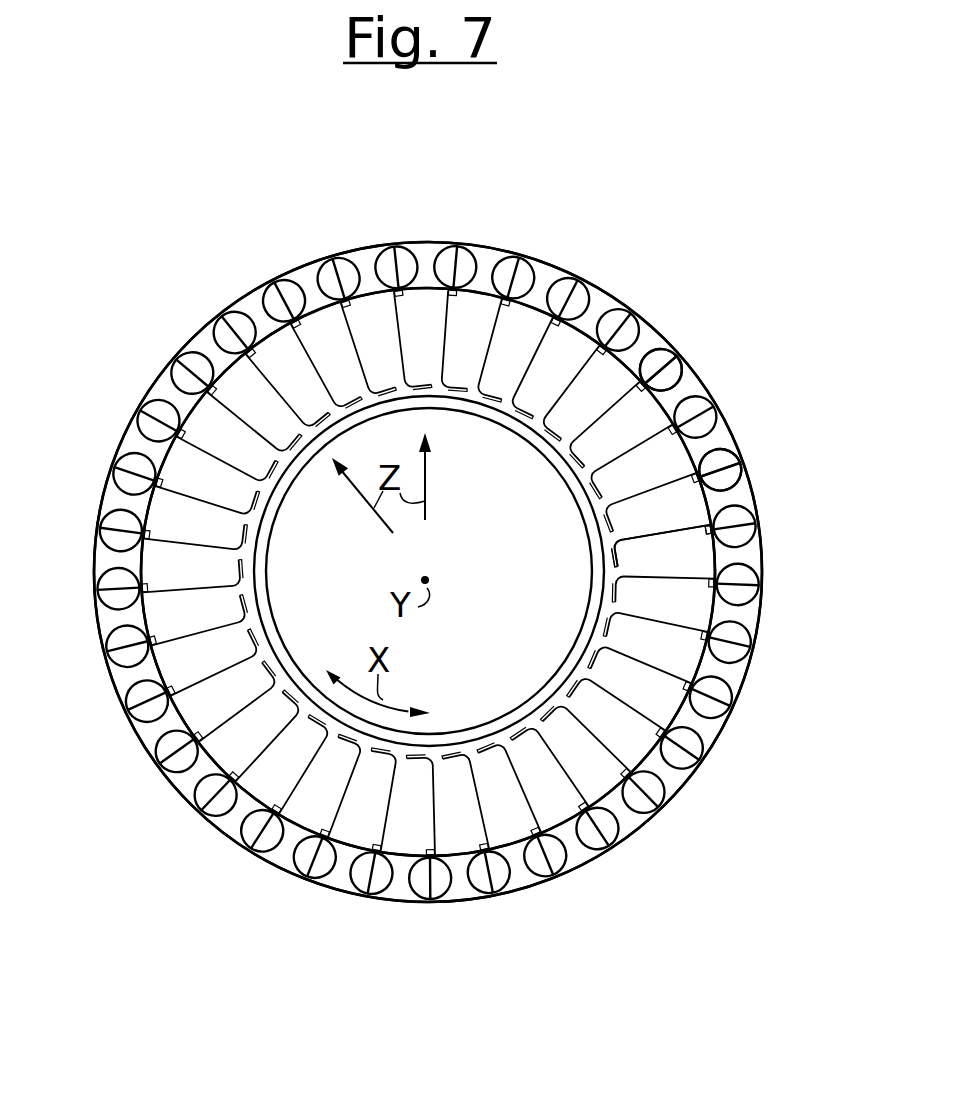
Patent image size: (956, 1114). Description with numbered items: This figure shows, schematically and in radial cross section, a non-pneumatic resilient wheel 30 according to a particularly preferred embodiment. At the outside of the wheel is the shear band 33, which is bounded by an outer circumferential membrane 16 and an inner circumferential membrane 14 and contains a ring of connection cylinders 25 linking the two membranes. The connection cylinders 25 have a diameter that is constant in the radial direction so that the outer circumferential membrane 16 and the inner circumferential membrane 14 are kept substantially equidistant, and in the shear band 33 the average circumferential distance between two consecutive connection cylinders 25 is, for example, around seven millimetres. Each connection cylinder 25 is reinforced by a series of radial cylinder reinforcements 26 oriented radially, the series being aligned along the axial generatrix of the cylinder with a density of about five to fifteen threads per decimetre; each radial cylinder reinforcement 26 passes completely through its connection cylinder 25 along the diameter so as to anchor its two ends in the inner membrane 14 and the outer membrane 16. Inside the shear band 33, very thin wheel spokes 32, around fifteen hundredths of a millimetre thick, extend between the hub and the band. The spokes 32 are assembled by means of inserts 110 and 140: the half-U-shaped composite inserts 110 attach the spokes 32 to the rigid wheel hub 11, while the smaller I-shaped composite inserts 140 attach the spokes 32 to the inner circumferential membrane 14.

The non-pneumatic resilient wheel 30 is at (672, 278).
The outer circumferential membrane 16 is at (300, 267).
The inner circumferential membrane 14 is at (312, 308).
The shear band 33 is at (207, 340).
The connection cylinders 25 is at (422, 257).
The radial cylinder reinforcement 26 is at (722, 468).
The wheel spokes 32 is at (483, 367).
The inserts 140 is at (694, 538).
The inserts 110 is at (586, 521).
The wheel hub 11 is at (256, 570).